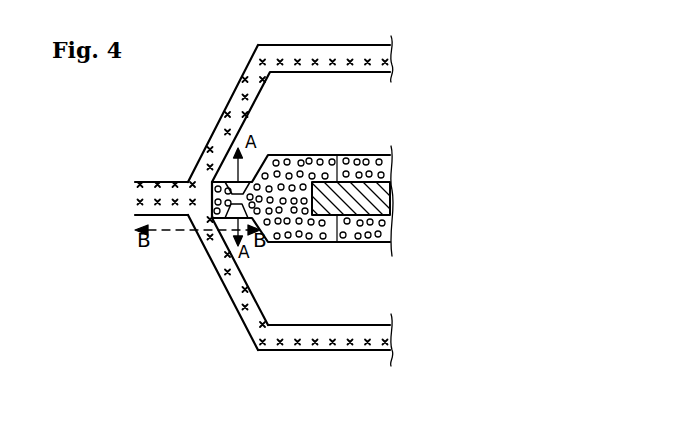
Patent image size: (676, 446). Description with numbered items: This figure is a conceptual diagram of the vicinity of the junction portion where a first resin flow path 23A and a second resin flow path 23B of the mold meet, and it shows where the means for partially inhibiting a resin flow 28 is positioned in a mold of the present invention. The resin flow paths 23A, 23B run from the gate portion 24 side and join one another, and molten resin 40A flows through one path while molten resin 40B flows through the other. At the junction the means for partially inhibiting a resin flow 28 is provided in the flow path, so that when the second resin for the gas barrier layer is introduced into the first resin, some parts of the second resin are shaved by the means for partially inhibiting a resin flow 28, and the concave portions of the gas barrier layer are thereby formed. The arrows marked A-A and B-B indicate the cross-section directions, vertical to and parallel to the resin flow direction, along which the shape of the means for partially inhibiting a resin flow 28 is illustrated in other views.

The gate portion 24 is at (141, 203).
The resin flow path 23B is at (360, 152).
The resin flow path 23A is at (303, 352).
The molten resin 40A is at (223, 275).
The molten resin 40B is at (352, 222).
The means for partially inhibiting resin flow 28 is at (233, 224).